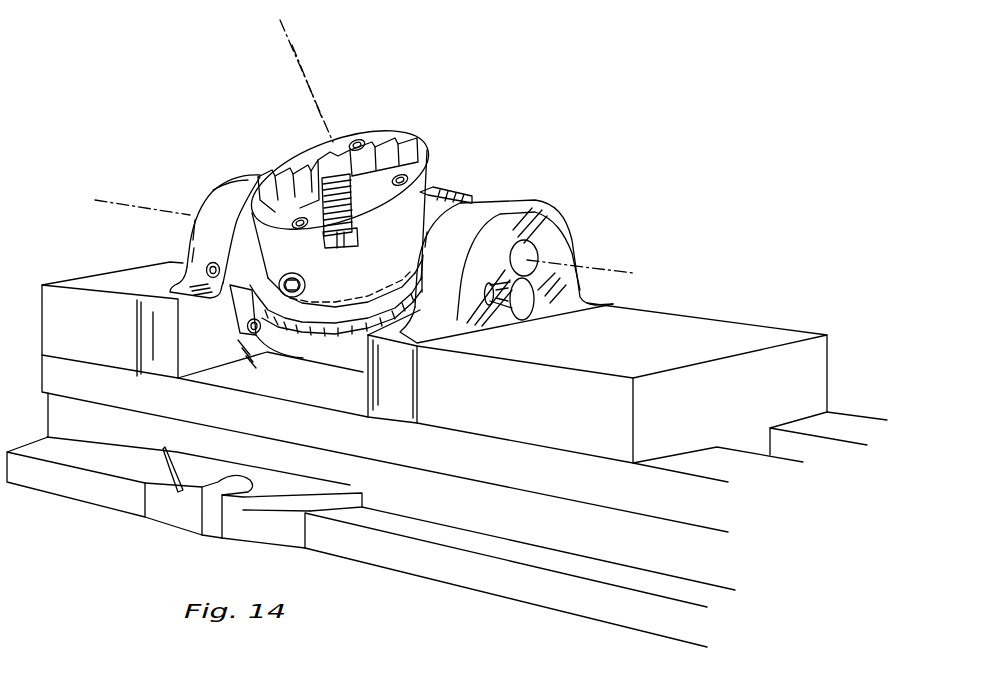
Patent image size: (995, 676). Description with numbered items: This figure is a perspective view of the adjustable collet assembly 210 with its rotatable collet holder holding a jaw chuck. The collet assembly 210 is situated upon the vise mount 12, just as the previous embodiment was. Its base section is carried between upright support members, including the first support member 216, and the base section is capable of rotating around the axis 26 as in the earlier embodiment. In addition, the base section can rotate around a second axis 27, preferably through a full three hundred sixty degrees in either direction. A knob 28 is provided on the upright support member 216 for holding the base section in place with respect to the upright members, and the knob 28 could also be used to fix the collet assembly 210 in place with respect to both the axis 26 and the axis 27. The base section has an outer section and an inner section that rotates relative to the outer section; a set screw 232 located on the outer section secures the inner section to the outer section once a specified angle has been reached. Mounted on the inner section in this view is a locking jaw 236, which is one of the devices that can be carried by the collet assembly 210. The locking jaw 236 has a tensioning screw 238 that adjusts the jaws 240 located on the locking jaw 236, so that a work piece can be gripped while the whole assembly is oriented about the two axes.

The vise mount 12 is at (76, 490).
The axis 26 is at (617, 270).
The second axis 27 is at (298, 62).
The knob 28 is at (522, 312).
The collet assembly 210 is at (204, 127).
The first support member 216 is at (212, 205).
The set screw 232 is at (255, 336).
The locking jaw 236 is at (433, 183).
The tensioning screw 238 is at (288, 327).
The jaws 240 is at (299, 150).